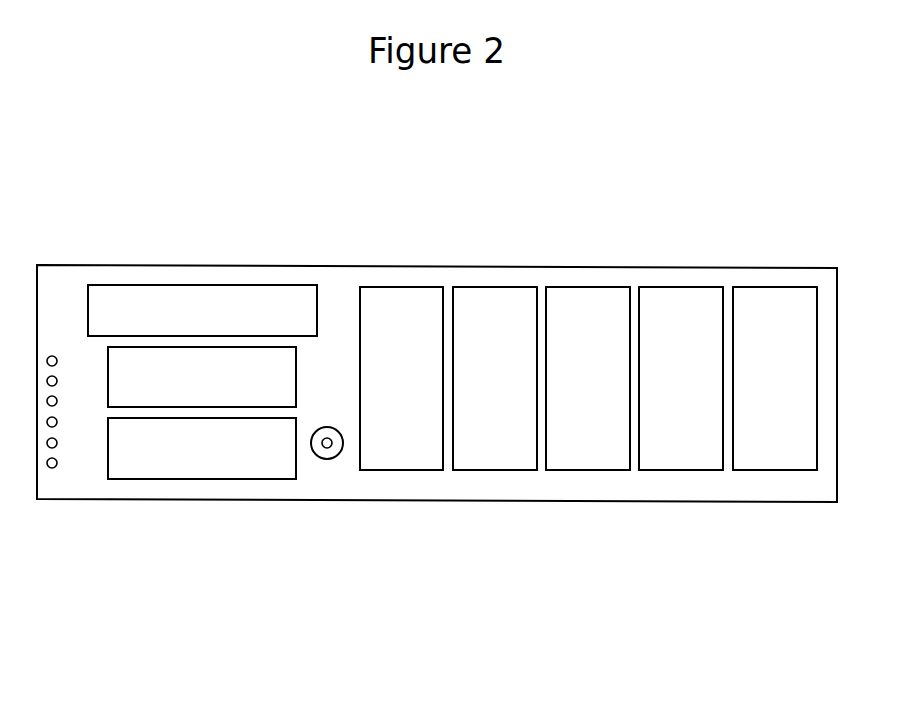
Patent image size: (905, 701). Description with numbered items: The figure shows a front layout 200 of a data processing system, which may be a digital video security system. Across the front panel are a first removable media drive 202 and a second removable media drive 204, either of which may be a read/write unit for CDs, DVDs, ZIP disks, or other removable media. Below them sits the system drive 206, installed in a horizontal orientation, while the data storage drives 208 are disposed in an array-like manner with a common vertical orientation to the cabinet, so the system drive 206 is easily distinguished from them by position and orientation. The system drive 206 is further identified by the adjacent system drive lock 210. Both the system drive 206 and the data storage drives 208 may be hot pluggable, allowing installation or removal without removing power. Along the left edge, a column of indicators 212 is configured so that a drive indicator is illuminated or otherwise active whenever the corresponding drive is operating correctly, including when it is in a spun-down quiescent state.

The front layout 200 is at (710, 238).
The first removable media drive 202 is at (170, 297).
The second removable media drive 204 is at (240, 380).
The system drive 206 is at (192, 447).
The data storage drives 208 is at (763, 480).
The system drive lock 210 is at (338, 470).
The indicators 212 is at (67, 427).